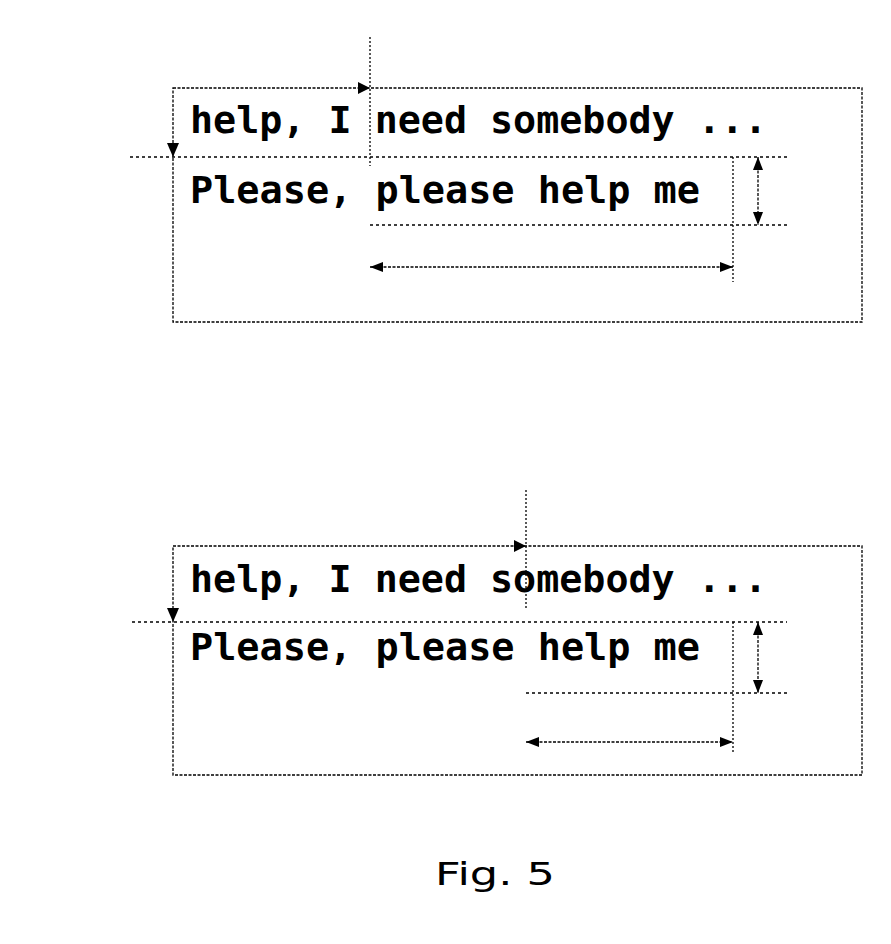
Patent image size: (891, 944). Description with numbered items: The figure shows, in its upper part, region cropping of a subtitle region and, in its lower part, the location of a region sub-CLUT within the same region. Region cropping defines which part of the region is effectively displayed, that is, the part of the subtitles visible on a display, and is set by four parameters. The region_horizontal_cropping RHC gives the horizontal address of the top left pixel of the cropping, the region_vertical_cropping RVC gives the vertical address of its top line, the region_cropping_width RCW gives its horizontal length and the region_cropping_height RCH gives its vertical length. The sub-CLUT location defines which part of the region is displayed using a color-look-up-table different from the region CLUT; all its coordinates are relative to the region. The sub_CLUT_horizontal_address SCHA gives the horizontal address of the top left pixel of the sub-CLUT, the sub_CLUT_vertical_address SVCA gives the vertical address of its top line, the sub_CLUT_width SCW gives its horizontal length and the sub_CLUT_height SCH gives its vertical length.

The region_horizontal_cropping RHC is at (362, 83).
The region_vertical_cropping RVC is at (422, 155).
The region_cropping_height RCH is at (796, 191).
The region_cropping_width RCW is at (551, 229).
The sub_CLUT_horizontal_address SCHA is at (527, 528).
The sub_CLUT_vertical_address SVCA is at (415, 617).
The sub_CLUT_height SCH is at (796, 657).
The sub_CLUT_width SCW is at (629, 700).